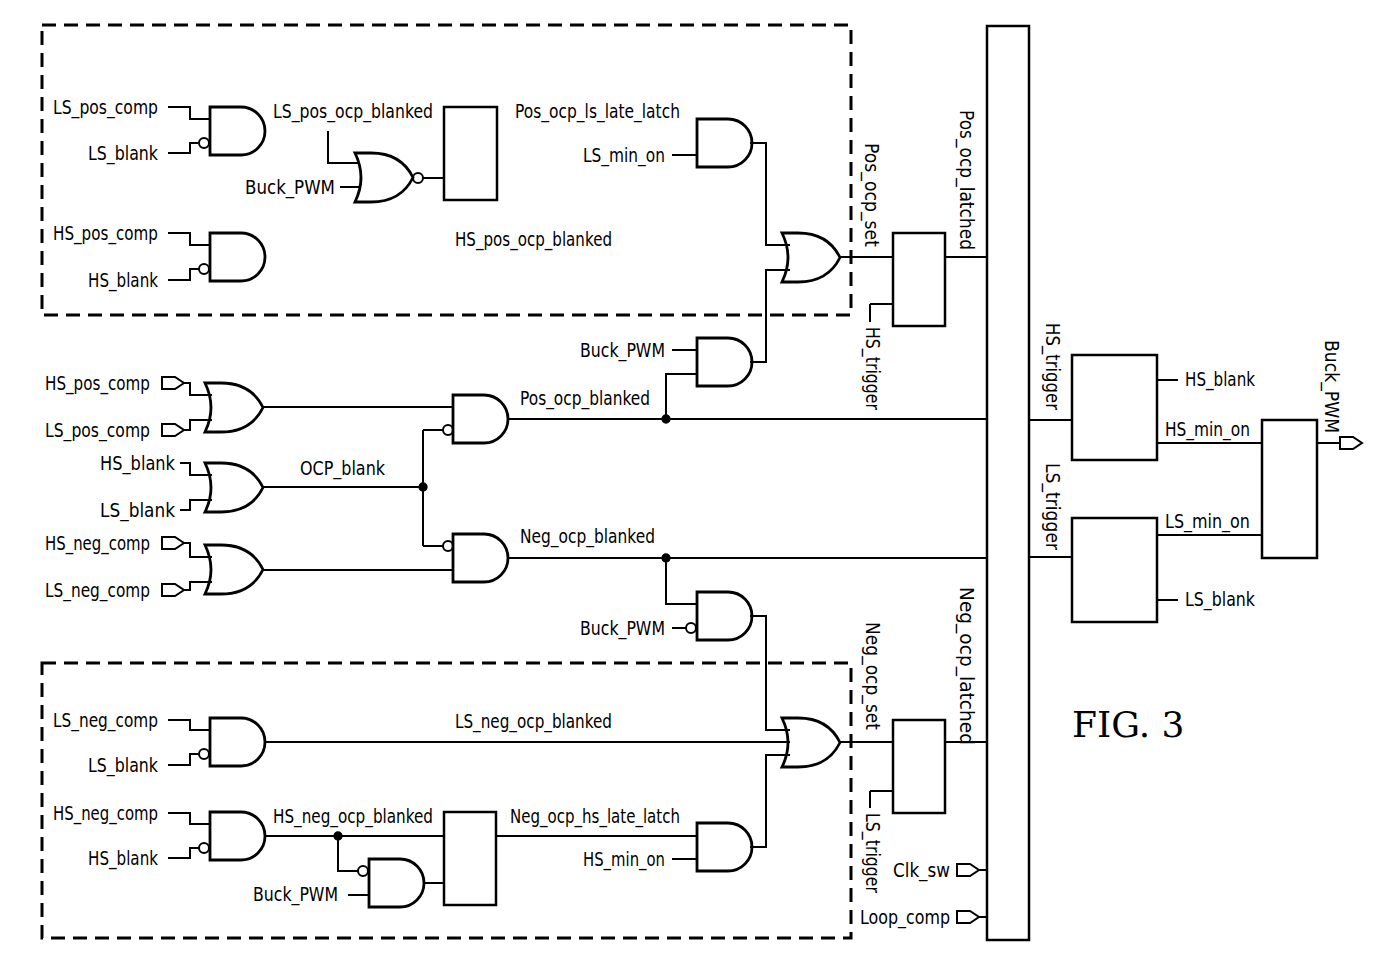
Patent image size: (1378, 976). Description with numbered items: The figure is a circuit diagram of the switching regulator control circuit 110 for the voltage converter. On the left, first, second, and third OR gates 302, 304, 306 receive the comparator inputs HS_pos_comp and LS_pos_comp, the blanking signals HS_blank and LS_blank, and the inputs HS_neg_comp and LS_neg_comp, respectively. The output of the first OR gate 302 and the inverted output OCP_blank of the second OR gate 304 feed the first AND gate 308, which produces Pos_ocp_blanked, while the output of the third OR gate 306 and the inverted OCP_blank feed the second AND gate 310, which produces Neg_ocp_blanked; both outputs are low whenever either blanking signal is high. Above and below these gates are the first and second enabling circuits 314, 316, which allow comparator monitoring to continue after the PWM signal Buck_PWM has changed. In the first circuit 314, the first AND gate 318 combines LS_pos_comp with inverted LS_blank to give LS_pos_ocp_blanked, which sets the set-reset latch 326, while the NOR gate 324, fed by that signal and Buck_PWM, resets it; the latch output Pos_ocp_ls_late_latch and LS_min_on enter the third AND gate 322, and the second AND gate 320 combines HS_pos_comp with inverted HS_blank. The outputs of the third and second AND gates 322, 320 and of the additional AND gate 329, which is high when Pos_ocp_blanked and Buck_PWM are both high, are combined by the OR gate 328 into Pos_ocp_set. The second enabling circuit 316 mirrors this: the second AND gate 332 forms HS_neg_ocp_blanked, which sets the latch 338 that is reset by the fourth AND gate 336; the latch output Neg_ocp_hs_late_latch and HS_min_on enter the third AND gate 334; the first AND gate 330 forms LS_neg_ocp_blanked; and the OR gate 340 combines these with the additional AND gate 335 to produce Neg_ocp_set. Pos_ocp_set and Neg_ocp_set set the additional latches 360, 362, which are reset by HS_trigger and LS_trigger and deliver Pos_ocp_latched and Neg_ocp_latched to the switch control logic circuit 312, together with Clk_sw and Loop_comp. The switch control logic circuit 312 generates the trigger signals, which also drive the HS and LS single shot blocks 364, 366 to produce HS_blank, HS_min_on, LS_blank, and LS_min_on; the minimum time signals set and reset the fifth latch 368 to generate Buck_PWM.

The switching regulator control circuit 110 is at (1252, 106).
The first OR gate 302 is at (254, 388).
The second OR gate 304 is at (254, 468).
The third OR gate 306 is at (254, 550).
The first AND gate 308 is at (475, 395).
The second AND gate 310 is at (475, 534).
The switch control logic circuit 312 is at (1029, 157).
The first circuit 314 is at (858, 84).
The second enabling circuit 316 is at (422, 653).
The first AND gate 318 is at (228, 107).
The second AND gate 320 is at (258, 278).
The third AND gate 322 is at (718, 119).
The NOR gate 324 is at (372, 202).
The set-reset latch 326 is at (467, 107).
The OR gate 328 is at (812, 233).
The additional AND gate 329 is at (745, 378).
The first AND gate 330 is at (255, 725).
The second AND gate 332 is at (233, 860).
The third AND gate 334 is at (718, 872).
The additional AND gate 335 is at (745, 605).
The fourth AND gate 336 is at (385, 906).
The latch 338 is at (496, 883).
The OR gate 340 is at (808, 768).
The additional latch 360 is at (918, 233).
The additional latch 362 is at (918, 720).
The HS single shot block 364 is at (1115, 355).
The LS single shot block 366 is at (1115, 622).
The fifth latch 368 is at (1290, 558).